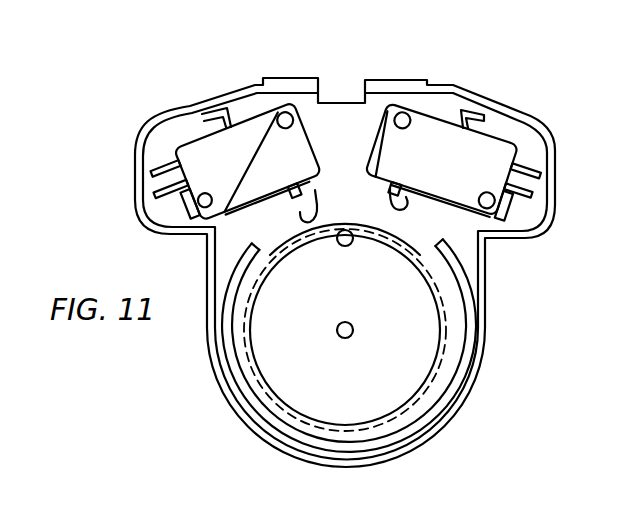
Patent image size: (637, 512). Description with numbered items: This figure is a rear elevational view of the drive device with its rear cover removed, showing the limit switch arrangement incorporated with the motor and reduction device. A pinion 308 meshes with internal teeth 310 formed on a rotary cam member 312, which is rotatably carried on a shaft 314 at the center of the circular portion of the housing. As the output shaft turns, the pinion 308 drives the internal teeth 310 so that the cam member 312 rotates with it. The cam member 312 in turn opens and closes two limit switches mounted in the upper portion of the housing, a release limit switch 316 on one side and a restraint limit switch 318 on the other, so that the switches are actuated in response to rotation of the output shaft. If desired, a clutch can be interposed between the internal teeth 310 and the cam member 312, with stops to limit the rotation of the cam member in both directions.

The pinion 308 is at (340, 247).
The internal teeth 310 is at (402, 412).
The rotary cam member 312 is at (455, 299).
The shaft 314 is at (345, 338).
The release limit switch 316 is at (238, 112).
The restraint limit switch 318 is at (488, 128).